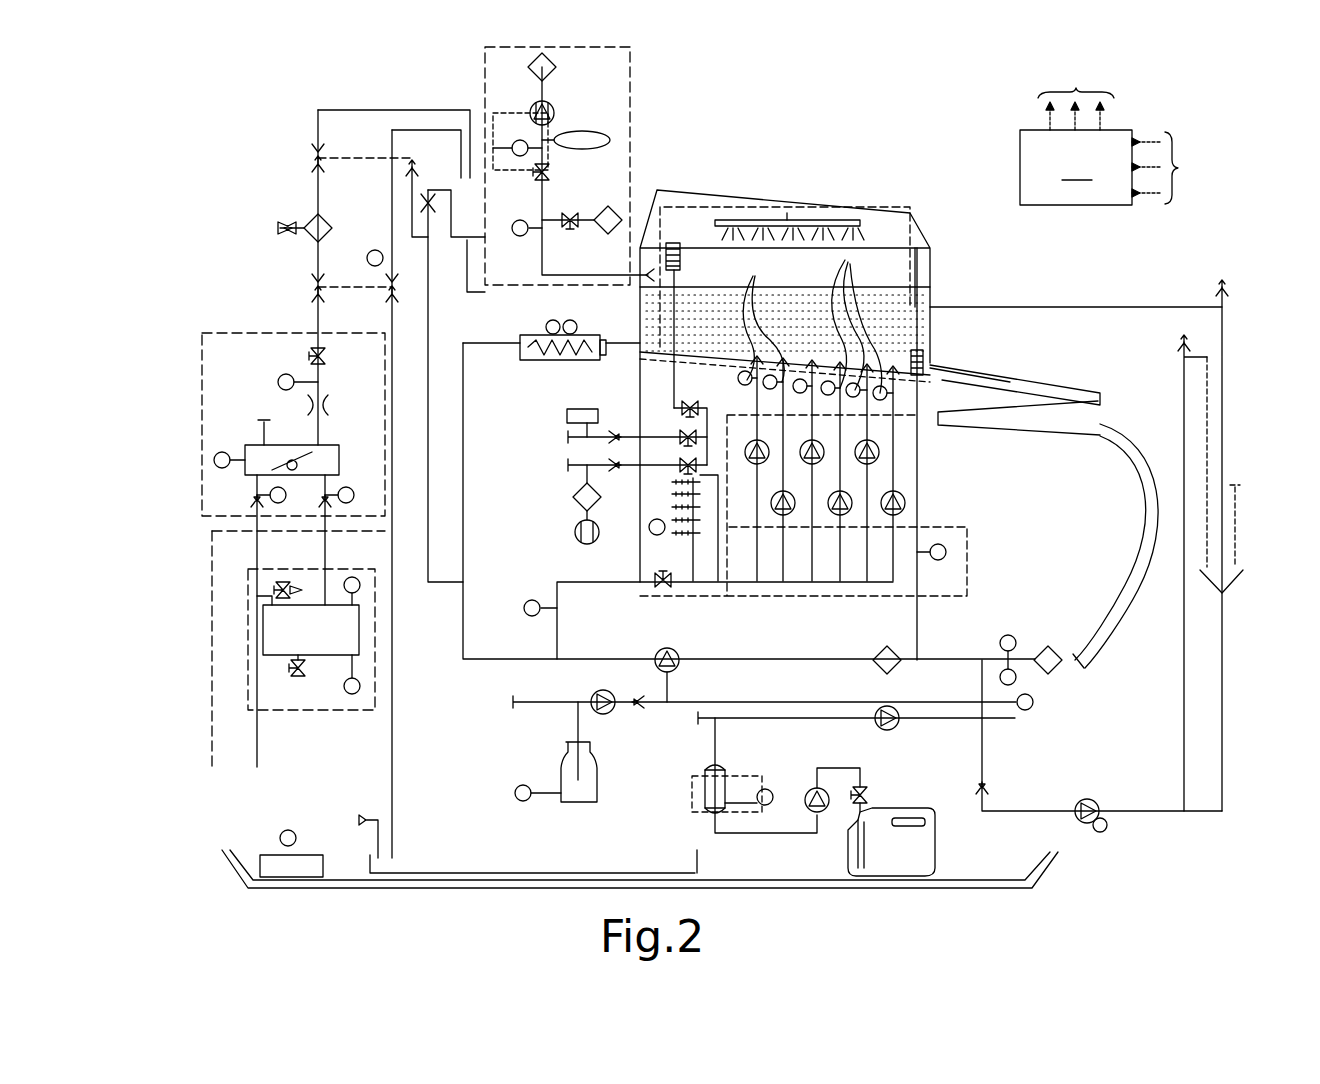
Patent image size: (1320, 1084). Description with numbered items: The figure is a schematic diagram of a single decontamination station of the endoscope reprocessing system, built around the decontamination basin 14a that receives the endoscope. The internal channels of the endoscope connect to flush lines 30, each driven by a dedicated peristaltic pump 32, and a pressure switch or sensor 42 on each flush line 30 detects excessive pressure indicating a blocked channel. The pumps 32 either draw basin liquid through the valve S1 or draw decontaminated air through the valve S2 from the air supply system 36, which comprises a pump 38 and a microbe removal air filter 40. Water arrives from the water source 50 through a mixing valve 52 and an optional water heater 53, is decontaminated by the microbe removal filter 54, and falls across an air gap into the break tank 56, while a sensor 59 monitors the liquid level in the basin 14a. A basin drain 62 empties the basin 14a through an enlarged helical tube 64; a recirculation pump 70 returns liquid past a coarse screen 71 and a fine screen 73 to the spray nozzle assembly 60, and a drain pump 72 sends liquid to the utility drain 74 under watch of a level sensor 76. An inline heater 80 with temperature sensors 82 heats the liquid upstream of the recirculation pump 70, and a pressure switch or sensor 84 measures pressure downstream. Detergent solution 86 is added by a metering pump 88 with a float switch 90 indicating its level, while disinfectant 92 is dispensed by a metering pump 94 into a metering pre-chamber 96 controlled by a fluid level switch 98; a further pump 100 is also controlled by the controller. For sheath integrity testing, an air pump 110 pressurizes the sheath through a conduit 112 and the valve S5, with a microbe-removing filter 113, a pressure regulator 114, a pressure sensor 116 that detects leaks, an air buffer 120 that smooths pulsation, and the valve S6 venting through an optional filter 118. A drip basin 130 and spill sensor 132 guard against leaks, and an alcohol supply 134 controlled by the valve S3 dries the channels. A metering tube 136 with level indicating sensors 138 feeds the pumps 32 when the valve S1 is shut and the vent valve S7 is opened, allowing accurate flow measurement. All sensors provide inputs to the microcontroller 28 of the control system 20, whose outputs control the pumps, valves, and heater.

The decontamination basin 14a is at (942, 270).
The control system 20 is at (1104, 168).
The microcontroller 28 is at (1083, 210).
The flush line 30 is at (745, 415).
The pump 32 is at (930, 355).
The air supply system 36 is at (576, 536).
The pump 38 is at (575, 528).
The microbe removal air filter 40 is at (575, 488).
The pressure switch or sensor 42 is at (774, 325).
The water source 50 is at (200, 789).
The mixing valve 52 is at (340, 445).
The water heater 53 is at (304, 698).
The microbe removal filter 54 is at (325, 222).
The break tank 56 is at (470, 285).
The sensor 59 is at (946, 552).
The spray nozzle assembly 60 is at (850, 213).
The basin drain 62 is at (945, 378).
The enlarged helical tube 64 is at (1097, 400).
The recirculation pump 70 is at (672, 648).
The coarse screen 71 is at (1058, 670).
The drain pump 72 is at (1092, 798).
The fine screen 73 is at (878, 672).
The utility drain 74 is at (1230, 598).
The level sensor 76 is at (1010, 718).
The inline heater 80 is at (530, 362).
The temperature sensors 82 is at (552, 320).
The pressure switch or sensor 84 is at (526, 618).
The detergent solution 86 is at (598, 782).
The metering pump 88 is at (592, 696).
The float switch 90 is at (518, 802).
The disinfectant 92 is at (935, 845).
The metering pump 94 is at (812, 790).
The metering pre-chamber 96 is at (700, 800).
The fluid level switch 98 is at (770, 790).
The pump 100 is at (892, 732).
The air pump 110 is at (554, 113).
The conduit 112 is at (635, 280).
The microbe-removing filter 113 is at (556, 73).
The pressure regulator 114 is at (520, 139).
The pressure sensor 116 is at (520, 237).
The filter 118 is at (618, 210).
The air buffer 120 is at (610, 140).
The drip basin 130 is at (347, 872).
The spill sensor 132 is at (303, 855).
The alcohol supply 134 is at (567, 418).
The metering tube 136 is at (712, 580).
The level indicating sensors 138 is at (655, 536).
The valve S1 is at (662, 592).
The valve S2 is at (668, 478).
The valve S3 is at (675, 432).
The valve S5 is at (540, 182).
The valve S6 is at (568, 212).
The vent valve S7 is at (680, 404).